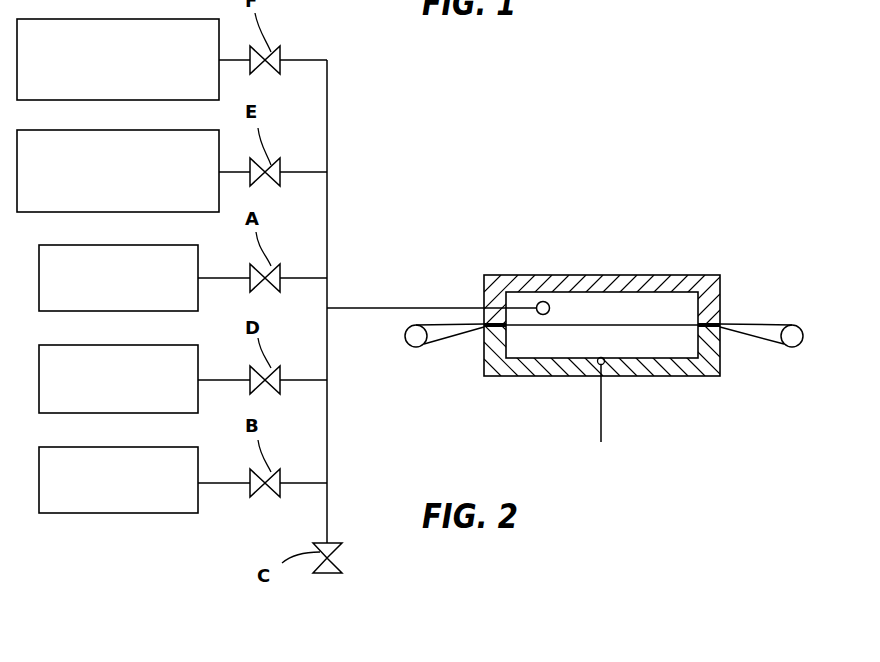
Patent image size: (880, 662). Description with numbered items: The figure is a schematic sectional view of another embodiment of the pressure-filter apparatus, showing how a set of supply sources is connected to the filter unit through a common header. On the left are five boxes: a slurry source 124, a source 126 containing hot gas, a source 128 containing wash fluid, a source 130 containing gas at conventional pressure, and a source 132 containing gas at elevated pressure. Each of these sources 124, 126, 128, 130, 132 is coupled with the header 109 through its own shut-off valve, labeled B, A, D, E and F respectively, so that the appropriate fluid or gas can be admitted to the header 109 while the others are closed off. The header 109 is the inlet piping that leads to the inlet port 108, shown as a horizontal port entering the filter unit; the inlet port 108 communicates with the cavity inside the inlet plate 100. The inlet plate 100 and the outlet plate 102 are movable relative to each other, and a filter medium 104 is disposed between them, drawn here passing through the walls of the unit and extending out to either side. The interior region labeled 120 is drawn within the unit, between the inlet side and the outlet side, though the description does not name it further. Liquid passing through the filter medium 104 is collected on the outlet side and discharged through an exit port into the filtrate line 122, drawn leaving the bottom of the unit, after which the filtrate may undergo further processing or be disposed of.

The inlet plate 100 is at (586, 326).
The outlet plate 102 is at (537, 377).
The filter medium 104 is at (742, 323).
The inlet port 108 is at (542, 301).
The inlet piping (header) 109 is at (330, 208).
The interior cavity 120 is at (667, 320).
The filtrate line 122 is at (602, 405).
The slurry source 124 is at (80, 513).
The source containing hot gas 126 is at (80, 311).
The source containing wash fluid 128 is at (80, 413).
The source containing gas at conventional pressure 130 is at (80, 212).
The source containing gas at elevated pressure 132 is at (80, 100).